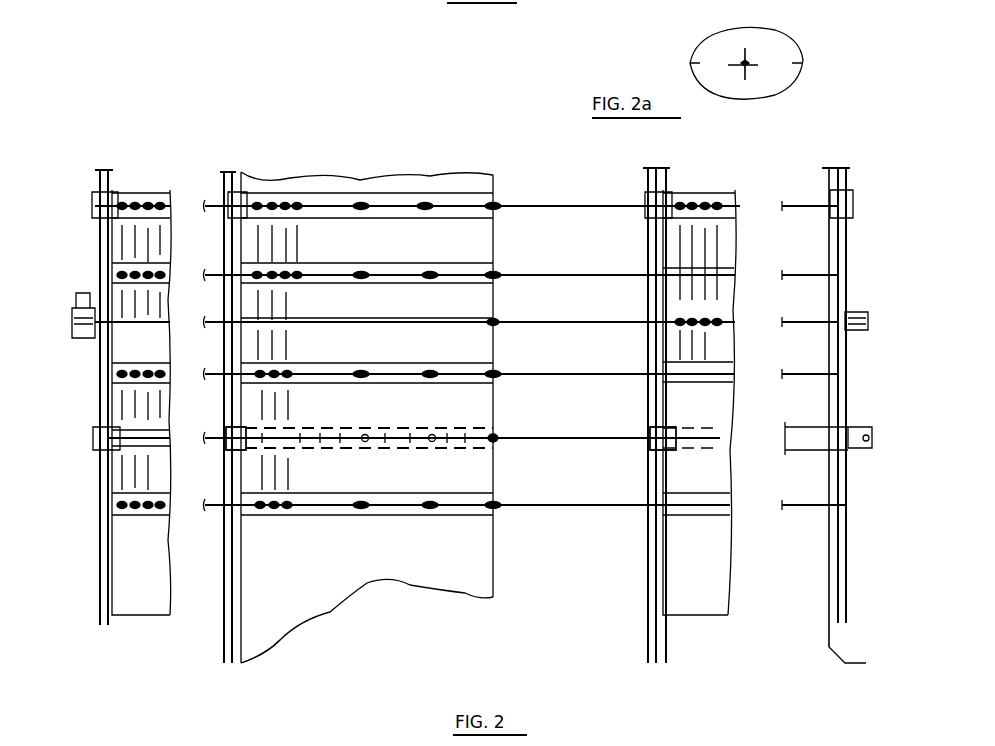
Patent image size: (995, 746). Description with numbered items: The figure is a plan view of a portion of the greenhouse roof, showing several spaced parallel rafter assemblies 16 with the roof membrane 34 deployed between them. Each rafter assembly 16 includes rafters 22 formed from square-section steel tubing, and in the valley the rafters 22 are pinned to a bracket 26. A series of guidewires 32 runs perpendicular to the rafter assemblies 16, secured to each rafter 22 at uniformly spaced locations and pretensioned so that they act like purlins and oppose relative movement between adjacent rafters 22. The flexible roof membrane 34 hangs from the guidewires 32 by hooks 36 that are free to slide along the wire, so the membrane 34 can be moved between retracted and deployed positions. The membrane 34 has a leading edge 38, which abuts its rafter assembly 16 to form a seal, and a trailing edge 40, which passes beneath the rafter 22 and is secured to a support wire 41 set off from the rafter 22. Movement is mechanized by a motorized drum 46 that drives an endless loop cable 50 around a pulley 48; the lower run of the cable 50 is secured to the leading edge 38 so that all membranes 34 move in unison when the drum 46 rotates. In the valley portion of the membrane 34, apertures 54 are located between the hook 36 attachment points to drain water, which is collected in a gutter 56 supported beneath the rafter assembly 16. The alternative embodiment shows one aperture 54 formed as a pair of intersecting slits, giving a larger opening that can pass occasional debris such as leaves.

In FIG. 2, the rafter assembly 16 is at (224, 176).
In FIG. 2, the rafter 22 is at (110, 408).
In FIG. 2, the bracket 26 is at (228, 452).
In FIG. 2, the guidewire 32 is at (562, 200).
In FIG. 2, the roof membrane 34 is at (398, 578).
In FIG. 2, the hook 36 is at (363, 270).
In FIG. 2, the leading edge 38 is at (498, 568).
In FIG. 2, the trailing edge 40 is at (244, 625).
In FIG. 2, the support wire 41 is at (232, 568).
In FIG. 2, the motorized drum 46 is at (78, 302).
In FIG. 2, the pulley 48 is at (858, 332).
In FIG. 2, the endless loop cable 50 is at (555, 318).
In FIG. 2, the aperture 54 is at (398, 430).
In FIG. 2a, the aperture 54 is at (745, 62).
In FIG. 2, the gutter 56 is at (858, 428).